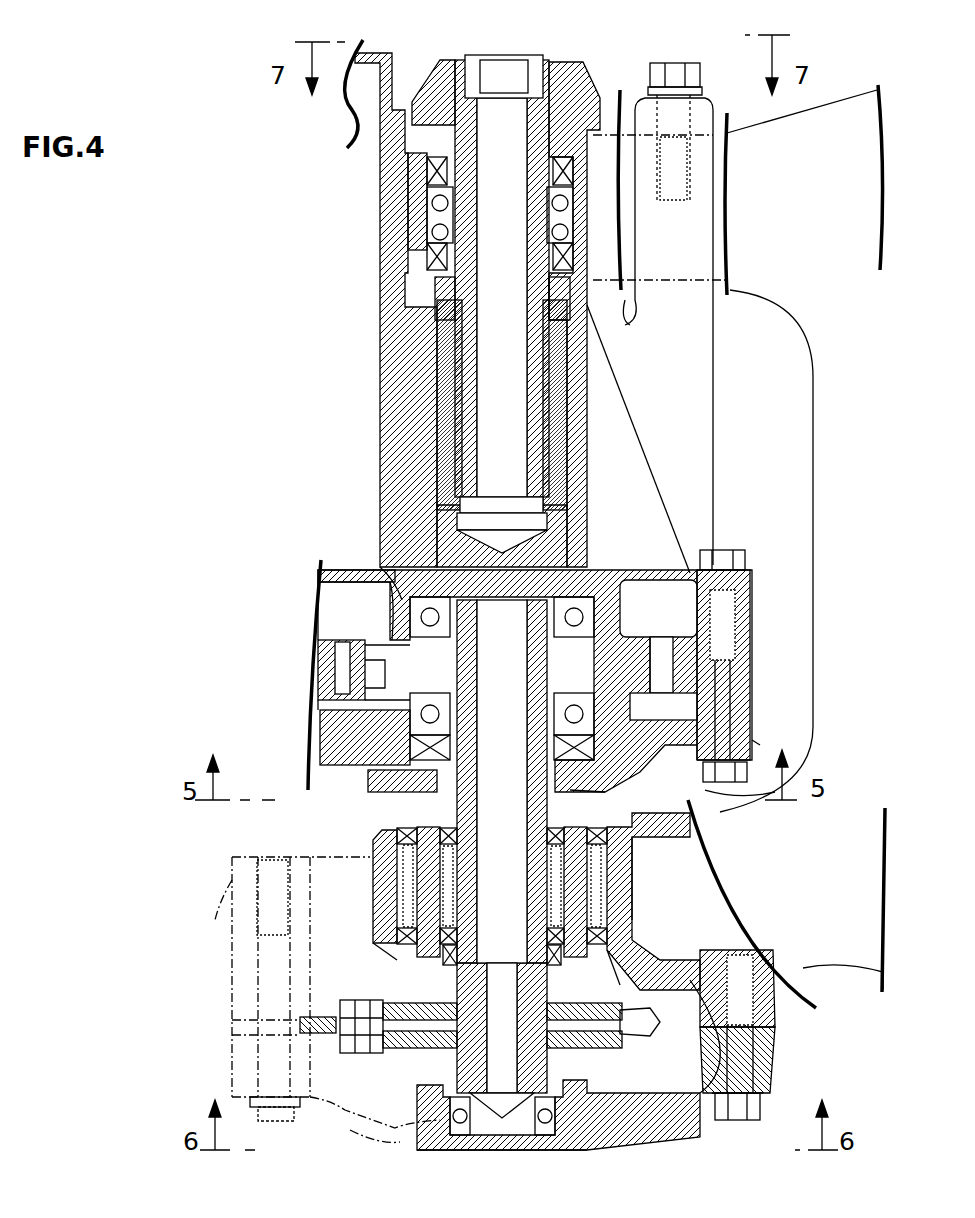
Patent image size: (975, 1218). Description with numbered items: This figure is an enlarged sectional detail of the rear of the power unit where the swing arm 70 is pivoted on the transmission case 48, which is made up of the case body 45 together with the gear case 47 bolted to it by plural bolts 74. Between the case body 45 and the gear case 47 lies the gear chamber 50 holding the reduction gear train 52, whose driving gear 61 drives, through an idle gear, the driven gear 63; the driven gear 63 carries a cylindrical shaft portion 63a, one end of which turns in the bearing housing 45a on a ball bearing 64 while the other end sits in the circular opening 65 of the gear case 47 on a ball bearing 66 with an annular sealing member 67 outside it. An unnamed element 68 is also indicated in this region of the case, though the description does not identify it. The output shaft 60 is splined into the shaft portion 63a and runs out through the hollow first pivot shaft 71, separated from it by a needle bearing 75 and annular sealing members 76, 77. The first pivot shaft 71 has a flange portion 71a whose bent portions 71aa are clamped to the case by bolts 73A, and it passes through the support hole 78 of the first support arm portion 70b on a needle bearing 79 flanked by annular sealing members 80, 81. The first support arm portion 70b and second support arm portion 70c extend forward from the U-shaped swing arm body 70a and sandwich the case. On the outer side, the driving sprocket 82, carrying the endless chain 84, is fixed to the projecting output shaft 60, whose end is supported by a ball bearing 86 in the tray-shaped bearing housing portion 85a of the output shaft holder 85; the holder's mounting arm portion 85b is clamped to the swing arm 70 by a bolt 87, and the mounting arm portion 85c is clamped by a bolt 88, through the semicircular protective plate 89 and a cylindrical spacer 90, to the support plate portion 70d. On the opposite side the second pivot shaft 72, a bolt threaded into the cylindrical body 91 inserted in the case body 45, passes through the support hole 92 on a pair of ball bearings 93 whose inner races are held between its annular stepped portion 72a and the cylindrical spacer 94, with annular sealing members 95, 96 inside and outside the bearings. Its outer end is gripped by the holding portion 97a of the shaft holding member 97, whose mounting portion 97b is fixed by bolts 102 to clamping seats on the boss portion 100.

The case body 45 is at (620, 575).
The bearing housing 45a is at (395, 618).
The gear case 47 is at (330, 748).
The transmission case 48 is at (355, 565).
The gear chamber 50 is at (720, 658).
The reduction gear train 52 is at (685, 577).
The output shaft 60 is at (440, 778).
The driving gear 61 is at (318, 648).
The driven gear 63 is at (700, 700).
The shaft portion 63a is at (400, 575).
The ball bearing 64 is at (580, 585).
The circular opening 65 is at (345, 690).
The ball bearing 66 is at (660, 768).
The annular sealing member 67 is at (640, 830).
The oil passage 68 is at (655, 660).
The swing arm 70 is at (828, 995).
The swing arm body 70a is at (883, 990).
The first support arm portion 70b is at (387, 940).
The second support arm portion 70c is at (630, 305).
The support plate portion 70d is at (235, 905).
The first pivot shaft 71 is at (405, 900).
The flange portion 71a is at (370, 775).
The bent portions 71aa is at (753, 742).
The second pivot shaft 72 is at (465, 136).
The annular stepped portion 72a is at (472, 197).
The bolts 73A is at (720, 782).
The bolts 74 is at (735, 555).
The needle bearing 75 is at (455, 893).
The annular sealing member 76 is at (470, 850).
The annular sealing member 77 is at (465, 962).
The support hole 78 is at (620, 915).
The needle bearing 79 is at (630, 880).
The annular sealing member 80 is at (378, 833).
The annular sealing member 81 is at (612, 955).
The driving sprocket 82 is at (650, 1035).
The endless chain 84 is at (360, 1055).
The output shaft holder 85 is at (618, 1140).
The bearing housing portion 85a is at (540, 1148).
The mounting arm portion 85b is at (770, 1060).
The mounting arm portion 85c is at (390, 1148).
The ball bearing 86 is at (462, 1130).
The bolt 87 is at (737, 1120).
The bolts 88 is at (275, 1120).
The protective plate 89 is at (318, 1033).
The cylindrical spacers 90 is at (240, 998).
The cylindrical body 91 is at (445, 400).
The support hole 92 is at (567, 165).
The ball bearings 93 is at (432, 232).
The cylindrical spacer 94 is at (437, 290).
The annular sealing member 95 is at (568, 300).
The annular sealing member 96 is at (427, 172).
The shaft holding member 97 is at (432, 62).
The holding portion 97a is at (560, 62).
The mounting portion 97b is at (598, 100).
The boss portion 100 is at (708, 180).
The bolts 102 is at (672, 63).